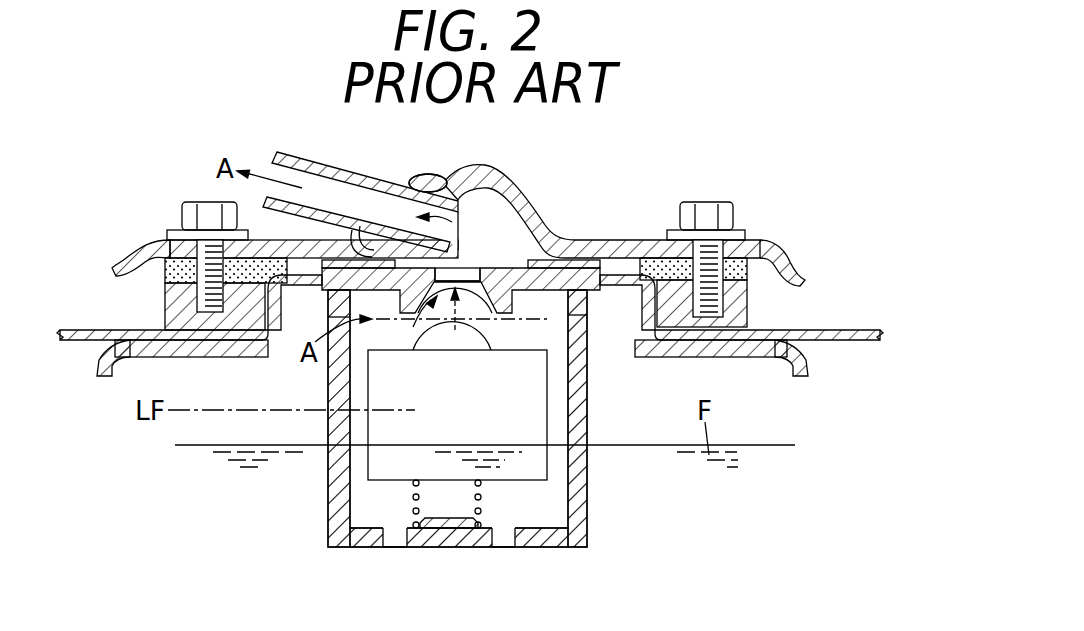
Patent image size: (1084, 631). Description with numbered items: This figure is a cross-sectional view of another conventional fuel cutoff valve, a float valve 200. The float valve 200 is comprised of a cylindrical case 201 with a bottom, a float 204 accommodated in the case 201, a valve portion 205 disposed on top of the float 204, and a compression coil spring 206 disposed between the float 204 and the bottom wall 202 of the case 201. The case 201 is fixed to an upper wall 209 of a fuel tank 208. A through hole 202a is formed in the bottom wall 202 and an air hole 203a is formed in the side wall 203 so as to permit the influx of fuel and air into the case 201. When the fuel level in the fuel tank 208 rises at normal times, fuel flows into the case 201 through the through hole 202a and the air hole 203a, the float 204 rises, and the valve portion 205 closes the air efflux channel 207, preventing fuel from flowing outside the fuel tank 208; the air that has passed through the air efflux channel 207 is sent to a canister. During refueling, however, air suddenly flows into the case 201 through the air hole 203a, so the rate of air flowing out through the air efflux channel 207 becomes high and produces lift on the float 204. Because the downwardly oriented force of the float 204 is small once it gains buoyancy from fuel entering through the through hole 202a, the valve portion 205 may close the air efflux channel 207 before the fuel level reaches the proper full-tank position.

The float valve 200 is at (312, 528).
The case 201 is at (497, 446).
The bottom wall 202 is at (518, 560).
The through hole 202a is at (505, 537).
The side wall 203 is at (580, 517).
The air hole 203a is at (330, 352).
The float 204 is at (537, 465).
The valve portion 205 is at (475, 345).
The compression coil spring 206 is at (410, 508).
The air efflux channel 207 is at (469, 276).
The fuel tank 208 is at (862, 318).
The upper wall 209 is at (842, 342).